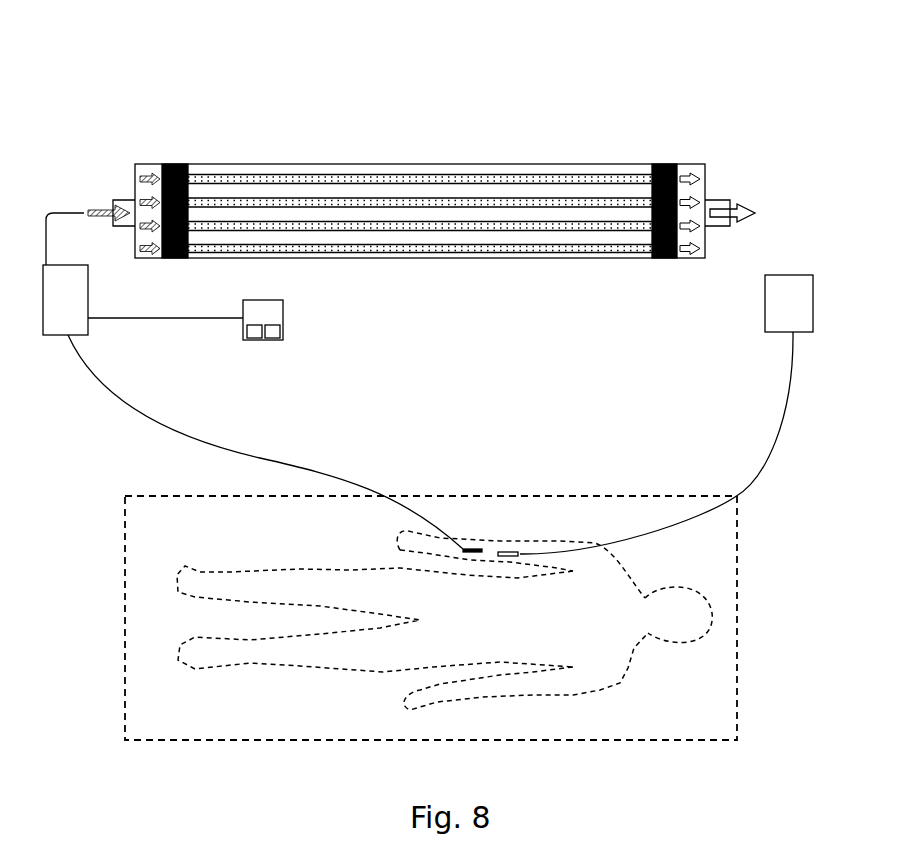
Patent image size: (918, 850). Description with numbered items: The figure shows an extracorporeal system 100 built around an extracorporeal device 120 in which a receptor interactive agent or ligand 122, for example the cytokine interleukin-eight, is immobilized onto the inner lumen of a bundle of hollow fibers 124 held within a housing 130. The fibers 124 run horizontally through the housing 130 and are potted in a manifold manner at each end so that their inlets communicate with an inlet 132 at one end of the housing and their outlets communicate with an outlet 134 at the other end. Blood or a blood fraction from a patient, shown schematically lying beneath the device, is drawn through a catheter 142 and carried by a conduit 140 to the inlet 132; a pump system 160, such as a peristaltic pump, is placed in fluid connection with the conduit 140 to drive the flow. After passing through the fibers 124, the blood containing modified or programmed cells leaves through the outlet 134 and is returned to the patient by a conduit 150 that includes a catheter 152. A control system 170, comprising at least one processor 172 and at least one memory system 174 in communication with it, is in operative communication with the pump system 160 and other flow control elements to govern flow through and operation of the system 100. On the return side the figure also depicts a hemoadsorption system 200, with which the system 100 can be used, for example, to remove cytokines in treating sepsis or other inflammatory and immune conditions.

The extracorporeal system 100 is at (680, 90).
The extracorporeal device 120 is at (151, 148).
The receptor interactive agent or ligand 122 is at (235, 176).
The hollow fibers 124 is at (412, 245).
The housing 130 is at (503, 163).
The inlet 132 is at (112, 193).
The outlet 134 is at (733, 193).
The conduit 140 is at (112, 380).
The catheter 142 is at (480, 548).
The conduit 150 is at (788, 383).
The catheter 152 is at (514, 552).
The pump system 160 is at (90, 293).
The control system 170 is at (284, 318).
The processor 172 is at (254, 338).
The memory system 174 is at (280, 338).
The hemoadsorption system 200 is at (752, 300).